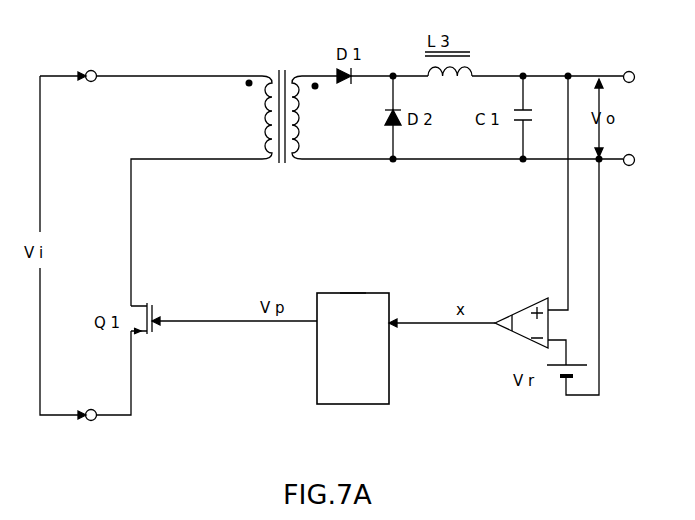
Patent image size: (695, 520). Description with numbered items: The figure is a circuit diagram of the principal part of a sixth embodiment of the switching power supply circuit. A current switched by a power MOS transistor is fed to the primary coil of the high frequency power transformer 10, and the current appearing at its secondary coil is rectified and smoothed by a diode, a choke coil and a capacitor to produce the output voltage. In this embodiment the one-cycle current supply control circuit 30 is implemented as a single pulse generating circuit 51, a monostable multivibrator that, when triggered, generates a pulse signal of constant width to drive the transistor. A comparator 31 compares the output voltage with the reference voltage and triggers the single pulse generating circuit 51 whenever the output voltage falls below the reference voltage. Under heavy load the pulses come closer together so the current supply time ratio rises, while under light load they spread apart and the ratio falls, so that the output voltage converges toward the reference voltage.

The high frequency power transformer 10 is at (282, 70).
The one-cycle current supply control circuit 30 is at (368, 436).
The comparator 31 is at (545, 297).
The single pulse generating circuit 51 is at (345, 292).